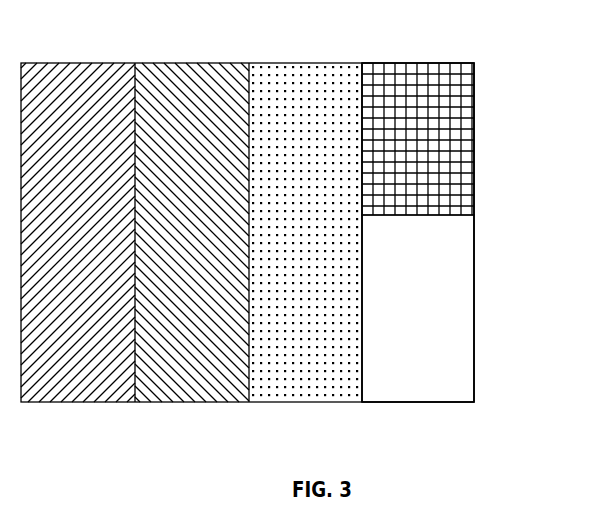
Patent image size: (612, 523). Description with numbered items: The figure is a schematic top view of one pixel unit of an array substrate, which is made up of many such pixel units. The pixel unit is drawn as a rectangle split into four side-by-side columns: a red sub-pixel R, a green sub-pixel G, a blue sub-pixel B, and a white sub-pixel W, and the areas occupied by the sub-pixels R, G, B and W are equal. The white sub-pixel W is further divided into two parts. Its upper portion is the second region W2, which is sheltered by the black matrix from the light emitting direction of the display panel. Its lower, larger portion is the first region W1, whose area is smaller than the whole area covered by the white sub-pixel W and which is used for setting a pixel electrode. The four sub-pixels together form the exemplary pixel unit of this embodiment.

The red sub-pixel R is at (78, 210).
The green sub-pixel G is at (192, 210).
The blue sub-pixel B is at (305, 210).
The white sub-pixel W is at (486, 210).
The first region W1 is at (436, 326).
The second region W2 is at (435, 123).